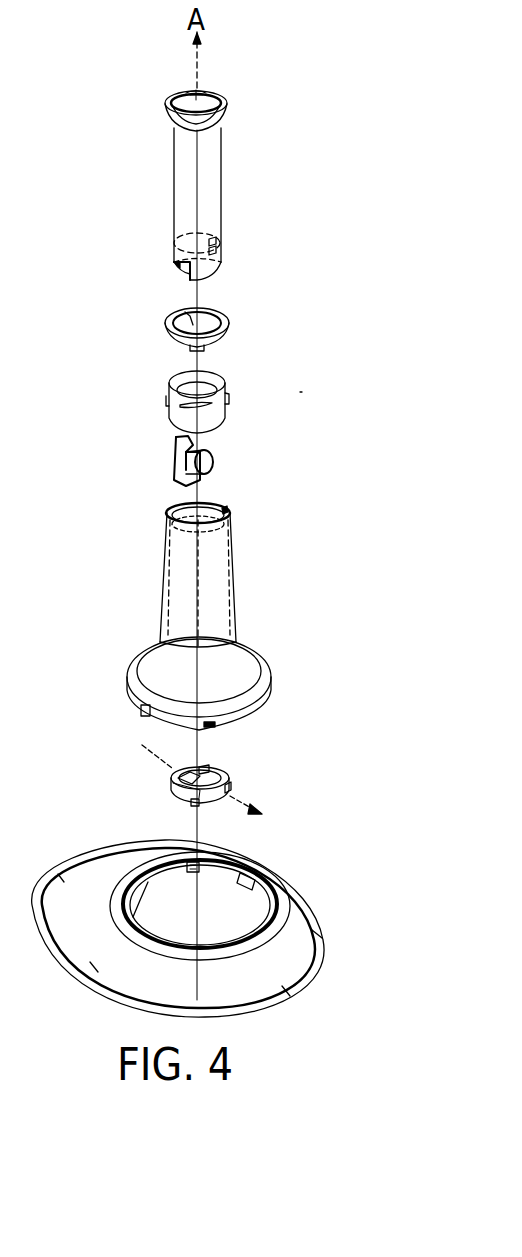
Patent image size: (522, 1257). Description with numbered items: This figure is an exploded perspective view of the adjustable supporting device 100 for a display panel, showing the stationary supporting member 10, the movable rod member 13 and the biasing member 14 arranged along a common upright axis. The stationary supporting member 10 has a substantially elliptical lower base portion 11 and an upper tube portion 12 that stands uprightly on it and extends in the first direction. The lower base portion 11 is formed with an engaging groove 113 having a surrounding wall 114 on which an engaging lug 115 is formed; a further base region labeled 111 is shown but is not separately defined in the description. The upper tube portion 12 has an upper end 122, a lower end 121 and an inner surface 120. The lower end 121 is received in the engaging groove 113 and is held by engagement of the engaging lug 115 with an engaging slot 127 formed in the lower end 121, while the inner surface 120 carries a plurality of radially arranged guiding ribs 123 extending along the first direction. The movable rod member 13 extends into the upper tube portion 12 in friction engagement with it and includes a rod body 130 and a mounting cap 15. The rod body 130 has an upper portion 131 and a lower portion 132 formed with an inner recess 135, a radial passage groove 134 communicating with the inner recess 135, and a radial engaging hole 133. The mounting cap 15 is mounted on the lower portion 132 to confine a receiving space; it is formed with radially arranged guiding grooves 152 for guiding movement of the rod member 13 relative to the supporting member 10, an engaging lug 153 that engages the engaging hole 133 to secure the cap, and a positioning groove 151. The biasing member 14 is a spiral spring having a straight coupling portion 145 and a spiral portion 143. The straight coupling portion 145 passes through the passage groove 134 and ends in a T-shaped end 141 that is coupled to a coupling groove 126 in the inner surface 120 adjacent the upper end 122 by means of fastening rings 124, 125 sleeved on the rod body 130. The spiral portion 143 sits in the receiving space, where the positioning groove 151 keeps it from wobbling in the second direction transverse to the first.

The adjustable supporting device 100 is at (304, 389).
The stationary supporting member 10 is at (70, 552).
The lower base portion 11 is at (108, 848).
The top surface of base 111 is at (70, 895).
The engaging groove 113 is at (235, 924).
The surrounding wall 114 is at (117, 935).
The engaging lug 115 is at (190, 876).
The upper tube portion 12 is at (163, 555).
The inner surface 120 is at (172, 512).
The lower end 121 is at (148, 652).
The upper end 122 is at (186, 516).
The guiding ribs 123 is at (185, 603).
The fastening ring 124 is at (180, 382).
The fastening ring 125 is at (166, 320).
The coupling groove 126 is at (236, 510).
The engaging slot 127 is at (142, 712).
The movable rod member 13 is at (168, 182).
The rod body 130 is at (214, 182).
The upper portion 131 is at (176, 104).
The lower portion 132 is at (213, 268).
The radial engaging hole 133 is at (224, 240).
The radial passage groove 134 is at (180, 270).
The inner recess 135 is at (226, 262).
The biasing member 14 is at (212, 452).
The T-shaped end 141 is at (178, 441).
The spiral portion 143 is at (208, 466).
The straight coupling portion 145 is at (178, 466).
The mounting cap 15 is at (168, 772).
The positioning groove 151 is at (175, 779).
The guiding grooves 152 is at (197, 804).
The engaging lug 153 is at (222, 772).